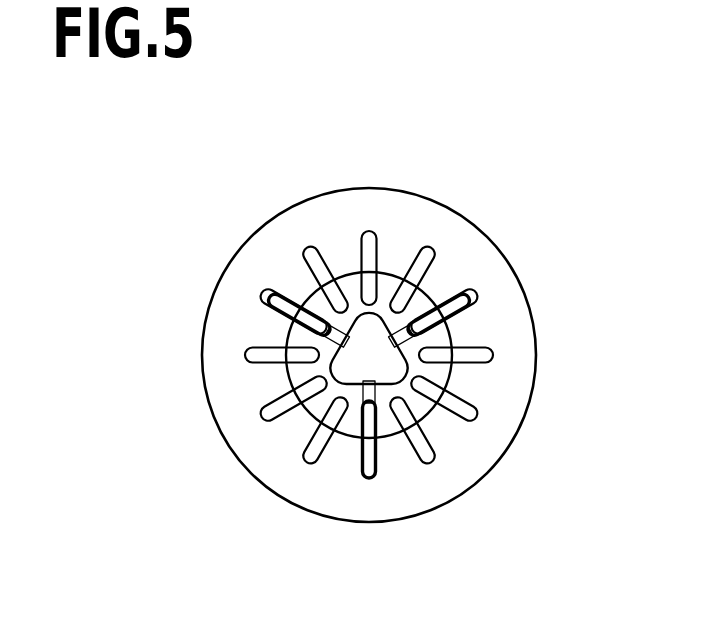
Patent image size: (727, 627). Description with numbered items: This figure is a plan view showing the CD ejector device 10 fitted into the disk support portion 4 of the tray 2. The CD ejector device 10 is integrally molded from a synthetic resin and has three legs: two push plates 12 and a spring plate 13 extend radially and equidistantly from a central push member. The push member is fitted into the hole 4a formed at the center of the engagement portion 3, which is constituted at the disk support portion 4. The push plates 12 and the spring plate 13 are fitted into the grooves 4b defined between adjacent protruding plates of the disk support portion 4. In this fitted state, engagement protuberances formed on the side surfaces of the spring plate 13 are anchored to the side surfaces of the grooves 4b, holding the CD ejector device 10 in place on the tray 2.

The tray 2 is at (546, 219).
The engagement portion 3 is at (459, 378).
The disk support portion 4 is at (460, 462).
The hole 4a is at (408, 352).
The grooves 4b is at (362, 237).
The CD ejector device 10 is at (353, 372).
The push plates 12 is at (277, 297).
The spring plate 13 is at (375, 463).